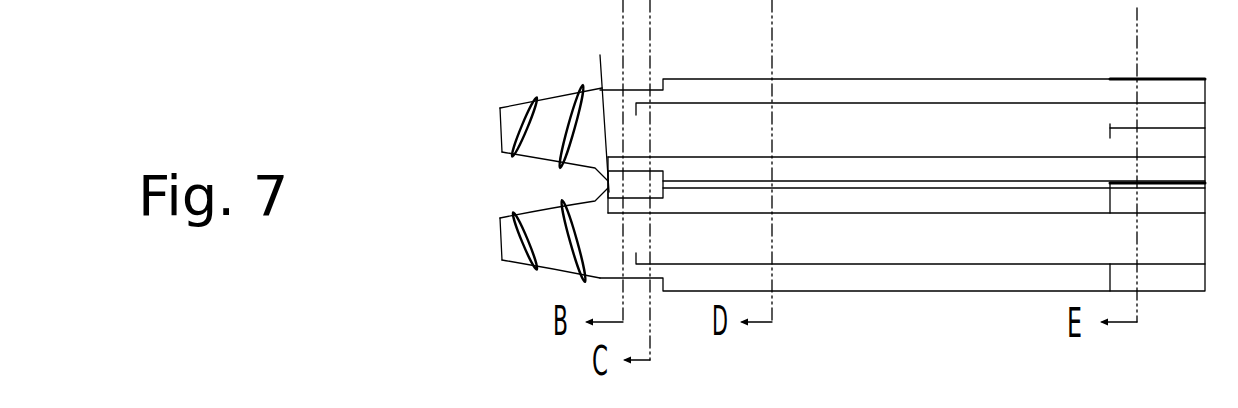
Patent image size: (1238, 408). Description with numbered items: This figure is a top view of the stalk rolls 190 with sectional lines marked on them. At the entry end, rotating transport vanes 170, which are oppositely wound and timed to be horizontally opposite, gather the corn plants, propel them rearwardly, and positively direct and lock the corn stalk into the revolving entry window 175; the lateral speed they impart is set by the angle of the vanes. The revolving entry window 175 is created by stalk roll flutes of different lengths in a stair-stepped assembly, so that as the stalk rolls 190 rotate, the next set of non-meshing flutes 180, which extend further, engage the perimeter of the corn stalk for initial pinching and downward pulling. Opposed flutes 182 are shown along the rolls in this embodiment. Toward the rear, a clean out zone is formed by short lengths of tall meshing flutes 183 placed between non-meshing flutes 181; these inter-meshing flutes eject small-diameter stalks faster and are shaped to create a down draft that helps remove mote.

The transport vanes 170 is at (525, 112).
The revolving entry window 175 is at (634, 189).
The non-meshing flutes 180 is at (742, 157).
The non-meshing flutes 181 is at (815, 103).
The opposed flutes 182 is at (949, 181).
The stalk rolls 190 is at (1053, 138).
The meshing flutes 183 is at (1182, 128).